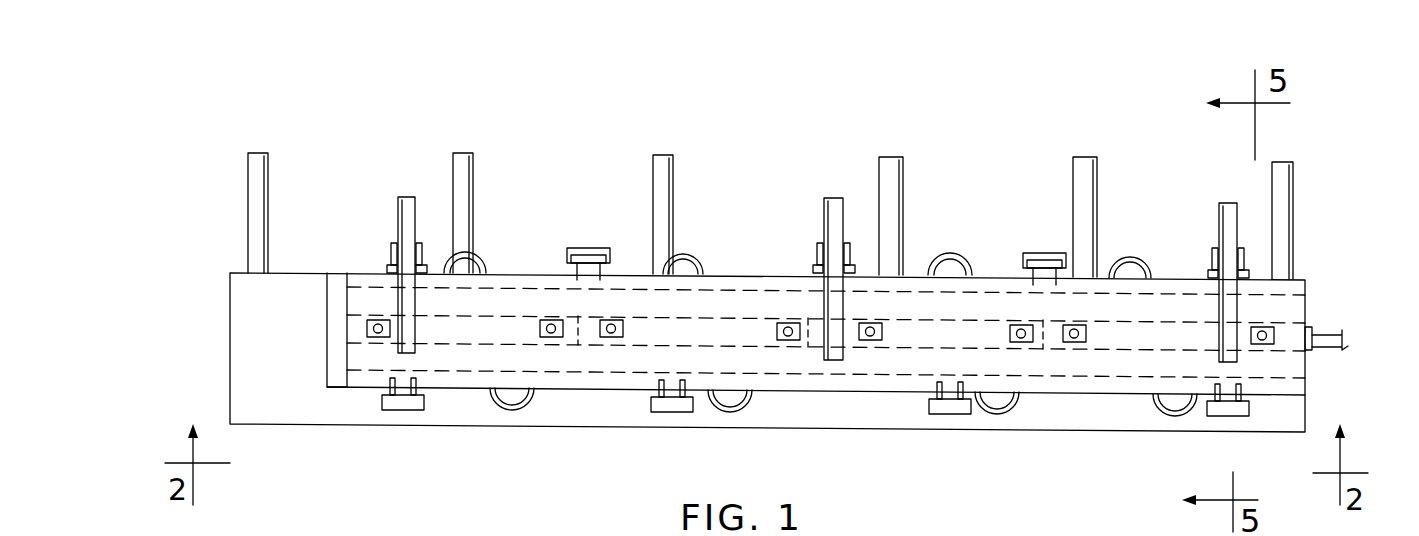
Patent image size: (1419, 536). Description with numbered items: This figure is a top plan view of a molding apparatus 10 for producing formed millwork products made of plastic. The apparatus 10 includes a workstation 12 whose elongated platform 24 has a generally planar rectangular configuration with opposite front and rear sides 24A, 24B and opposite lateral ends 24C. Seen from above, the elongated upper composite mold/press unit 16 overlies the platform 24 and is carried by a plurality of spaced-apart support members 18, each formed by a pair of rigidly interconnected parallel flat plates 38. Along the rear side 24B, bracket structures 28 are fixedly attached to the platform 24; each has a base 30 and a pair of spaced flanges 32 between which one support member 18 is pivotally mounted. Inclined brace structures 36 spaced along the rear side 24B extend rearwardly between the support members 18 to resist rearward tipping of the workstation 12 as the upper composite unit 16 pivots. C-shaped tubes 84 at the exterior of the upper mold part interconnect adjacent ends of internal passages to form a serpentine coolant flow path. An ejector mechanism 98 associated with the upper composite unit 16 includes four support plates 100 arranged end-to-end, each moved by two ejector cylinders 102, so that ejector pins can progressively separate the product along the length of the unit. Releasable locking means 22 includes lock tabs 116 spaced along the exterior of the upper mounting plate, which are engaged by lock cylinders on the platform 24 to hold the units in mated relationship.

The molding apparatus 10 is at (188, 172).
The workstation 12 is at (230, 349).
The upper composite mold/press unit 16 is at (1344, 330).
The support members 18 is at (407, 196).
The releasable locking means 22 is at (602, 255).
The platform 24 is at (230, 318).
The front side 24A is at (272, 425).
The rear side 24B is at (297, 272).
The lateral ends 24C is at (230, 397).
The bracket structures 28 is at (427, 242).
The base 30 is at (388, 268).
The flanges 32 is at (391, 250).
The inclined brace structures 36 is at (248, 172).
The flat plates 38 is at (397, 212).
The C-shaped tubes 84 is at (478, 258).
The ejector mechanism 98 is at (537, 328).
The support plates 100 is at (497, 330).
The ejector cylinders 102 is at (378, 340).
The lock tabs 116 is at (582, 248).